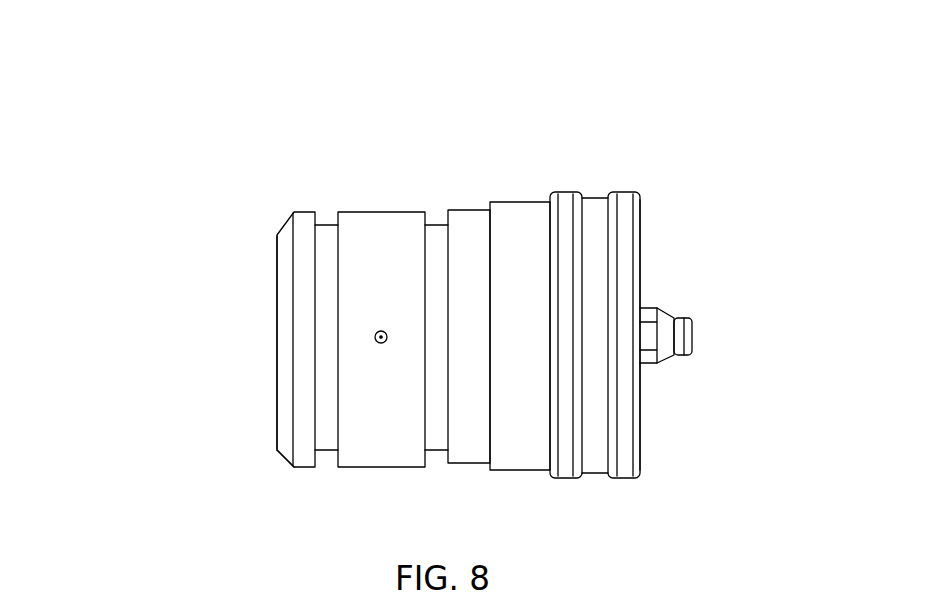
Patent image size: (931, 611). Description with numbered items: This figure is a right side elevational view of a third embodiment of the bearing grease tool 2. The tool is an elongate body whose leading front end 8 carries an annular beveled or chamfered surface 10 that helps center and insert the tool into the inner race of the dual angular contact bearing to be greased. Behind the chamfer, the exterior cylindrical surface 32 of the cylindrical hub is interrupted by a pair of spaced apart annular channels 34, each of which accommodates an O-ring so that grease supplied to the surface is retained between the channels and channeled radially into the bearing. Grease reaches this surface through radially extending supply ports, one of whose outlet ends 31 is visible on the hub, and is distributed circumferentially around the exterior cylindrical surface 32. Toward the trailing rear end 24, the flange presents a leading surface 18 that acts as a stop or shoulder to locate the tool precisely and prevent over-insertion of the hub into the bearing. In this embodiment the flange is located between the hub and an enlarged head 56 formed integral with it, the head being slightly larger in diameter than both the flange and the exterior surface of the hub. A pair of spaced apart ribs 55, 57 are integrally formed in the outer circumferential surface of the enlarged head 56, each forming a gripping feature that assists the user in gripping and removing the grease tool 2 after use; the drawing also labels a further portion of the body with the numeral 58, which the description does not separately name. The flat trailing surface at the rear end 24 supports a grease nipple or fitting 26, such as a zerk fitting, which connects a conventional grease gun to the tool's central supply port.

The grease tool 2 is at (688, 407).
The leading front end 8 is at (277, 347).
The annular beveled or chamfered surface 10 is at (283, 228).
The leading surface 18 is at (490, 388).
The trailing rear end 24 is at (641, 233).
The grease nipple or fitting 26 is at (667, 332).
The outlet end 31 is at (375, 333).
The exterior cylindrical surface 32 is at (305, 402).
The annular channels 34 is at (327, 225).
The rib 55 is at (622, 223).
The enlarged head 56 is at (595, 400).
The rib 57 is at (578, 197).
The sealing section 58 is at (522, 248).